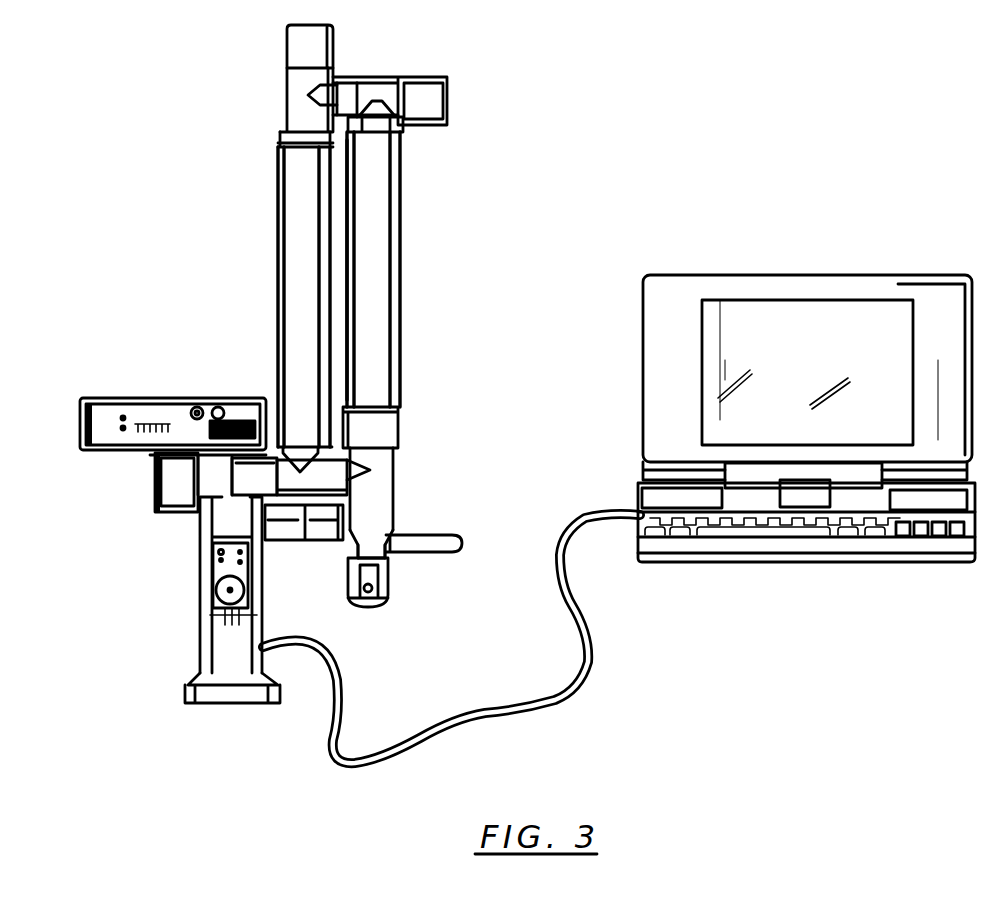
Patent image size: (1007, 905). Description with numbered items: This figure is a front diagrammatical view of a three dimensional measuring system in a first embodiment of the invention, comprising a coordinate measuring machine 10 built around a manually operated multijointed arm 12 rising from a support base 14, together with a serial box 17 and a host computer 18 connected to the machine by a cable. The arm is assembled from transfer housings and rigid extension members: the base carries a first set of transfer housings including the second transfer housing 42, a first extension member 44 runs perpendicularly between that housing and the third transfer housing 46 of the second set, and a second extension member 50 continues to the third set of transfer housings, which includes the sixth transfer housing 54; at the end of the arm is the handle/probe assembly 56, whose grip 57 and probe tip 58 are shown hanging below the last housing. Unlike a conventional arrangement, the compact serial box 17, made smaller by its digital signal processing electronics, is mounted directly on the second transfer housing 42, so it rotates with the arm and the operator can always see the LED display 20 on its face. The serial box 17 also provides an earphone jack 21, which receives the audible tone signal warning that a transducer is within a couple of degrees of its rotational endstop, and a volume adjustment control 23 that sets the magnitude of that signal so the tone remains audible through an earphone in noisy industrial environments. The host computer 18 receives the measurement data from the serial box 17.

The coordinate measuring machine 10 is at (308, 364).
The multijointed arm 12 is at (403, 223).
The support base 14 is at (201, 587).
The serial box 17 is at (130, 398).
The host computer 18 is at (770, 279).
The LED display 20 is at (150, 437).
The earphone jack 21 is at (198, 406).
The volume adjustment control 23 is at (220, 407).
The second transfer housing 42 is at (227, 490).
The first extension member 44 is at (402, 347).
The third transfer housing 46 is at (396, 84).
The second extension member 50 is at (277, 306).
The sixth transfer housing 54 is at (399, 484).
The handle/probe assembly 56 is at (392, 589).
The handle 57 is at (452, 538).
The probe neck 58 is at (352, 556).